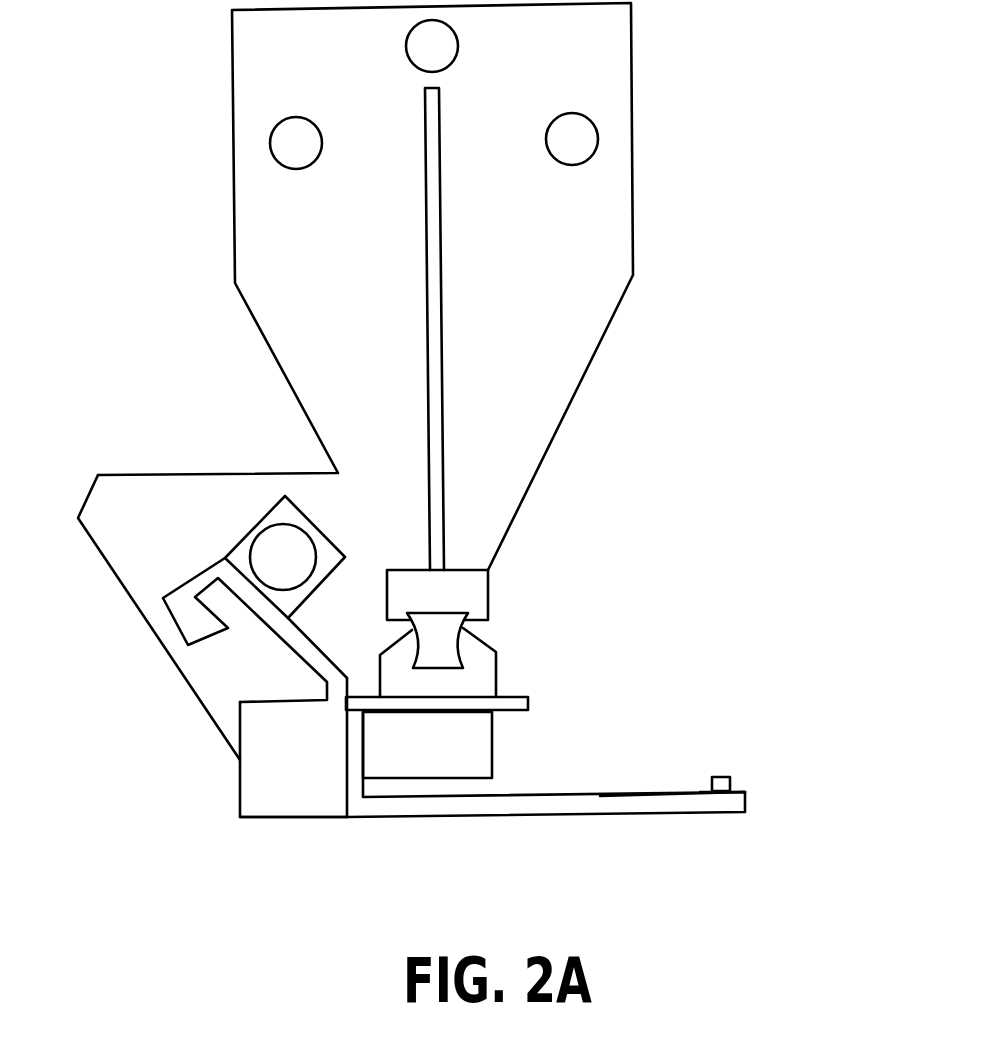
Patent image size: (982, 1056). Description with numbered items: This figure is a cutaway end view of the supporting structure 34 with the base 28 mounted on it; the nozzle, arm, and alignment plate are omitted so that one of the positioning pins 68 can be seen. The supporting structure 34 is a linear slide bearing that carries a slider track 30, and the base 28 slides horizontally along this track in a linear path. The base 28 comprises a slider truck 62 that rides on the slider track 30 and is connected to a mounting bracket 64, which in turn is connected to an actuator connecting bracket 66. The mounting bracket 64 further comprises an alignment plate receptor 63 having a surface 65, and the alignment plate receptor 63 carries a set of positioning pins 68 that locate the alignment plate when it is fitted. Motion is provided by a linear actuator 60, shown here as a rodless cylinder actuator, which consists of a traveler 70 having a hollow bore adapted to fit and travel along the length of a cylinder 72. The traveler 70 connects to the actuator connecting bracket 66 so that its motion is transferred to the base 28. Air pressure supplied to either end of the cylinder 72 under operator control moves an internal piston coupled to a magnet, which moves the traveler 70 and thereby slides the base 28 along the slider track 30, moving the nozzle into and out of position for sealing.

The base 28 is at (356, 858).
The slider track 30 is at (458, 650).
The supporting structure 34 is at (668, 221).
The linear actuator 60 is at (200, 519).
The slider truck 62 is at (497, 673).
The alignment plate receptor 63 is at (722, 754).
The mounting bracket 64 is at (518, 812).
The surface 65 is at (668, 792).
The actuator connecting bracket 66 is at (240, 780).
The positioning pins 68 is at (730, 778).
The traveler 70 is at (255, 537).
The cylinder 72 is at (282, 548).